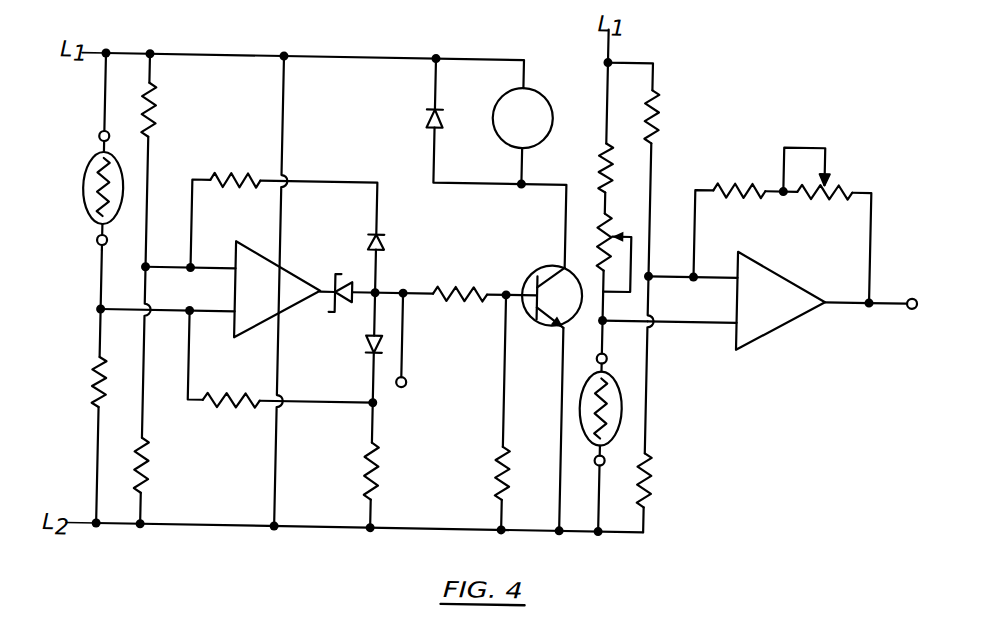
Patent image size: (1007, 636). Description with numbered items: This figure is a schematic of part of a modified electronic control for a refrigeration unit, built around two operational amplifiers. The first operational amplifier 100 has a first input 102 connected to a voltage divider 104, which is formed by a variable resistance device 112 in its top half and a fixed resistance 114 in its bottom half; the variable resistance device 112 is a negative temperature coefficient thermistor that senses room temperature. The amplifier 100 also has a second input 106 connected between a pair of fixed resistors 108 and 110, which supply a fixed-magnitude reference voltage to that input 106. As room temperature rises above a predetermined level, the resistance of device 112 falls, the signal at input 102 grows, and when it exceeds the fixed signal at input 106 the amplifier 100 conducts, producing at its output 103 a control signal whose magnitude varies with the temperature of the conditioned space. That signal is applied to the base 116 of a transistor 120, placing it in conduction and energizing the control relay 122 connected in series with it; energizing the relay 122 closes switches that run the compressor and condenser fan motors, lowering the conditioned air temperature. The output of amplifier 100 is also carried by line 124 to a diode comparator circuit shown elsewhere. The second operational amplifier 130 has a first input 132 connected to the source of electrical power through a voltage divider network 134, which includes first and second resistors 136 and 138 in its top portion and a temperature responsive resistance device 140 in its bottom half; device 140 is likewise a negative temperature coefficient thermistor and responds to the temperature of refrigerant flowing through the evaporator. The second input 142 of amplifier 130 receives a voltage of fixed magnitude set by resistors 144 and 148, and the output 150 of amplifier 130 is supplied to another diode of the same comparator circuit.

The operational amplifier 100 is at (302, 250).
The first input 102 is at (236, 316).
The output 103 is at (323, 296).
The voltage divider 104 is at (93, 297).
The second input 106 is at (234, 262).
The fixed resistor 108 is at (158, 101).
The fixed resistor 110 is at (162, 461).
The variable resistance device 112 is at (88, 194).
The fixed resistance 114 is at (99, 385).
The base 116 is at (527, 283).
The transistor 120 is at (547, 261).
The control relay 122 is at (543, 84).
The line 124 is at (411, 343).
The second operational amplifier 130 is at (799, 325).
The first input 132 is at (738, 319).
The voltage divider network 134 is at (627, 333).
The first resistor 136 is at (604, 155).
The second resistor 138 is at (617, 204).
The temperature responsive resistance device 140 is at (630, 411).
The second input 142 is at (738, 262).
The resistor 144 is at (661, 101).
The resistor 148 is at (662, 463).
The output 150 is at (898, 296).